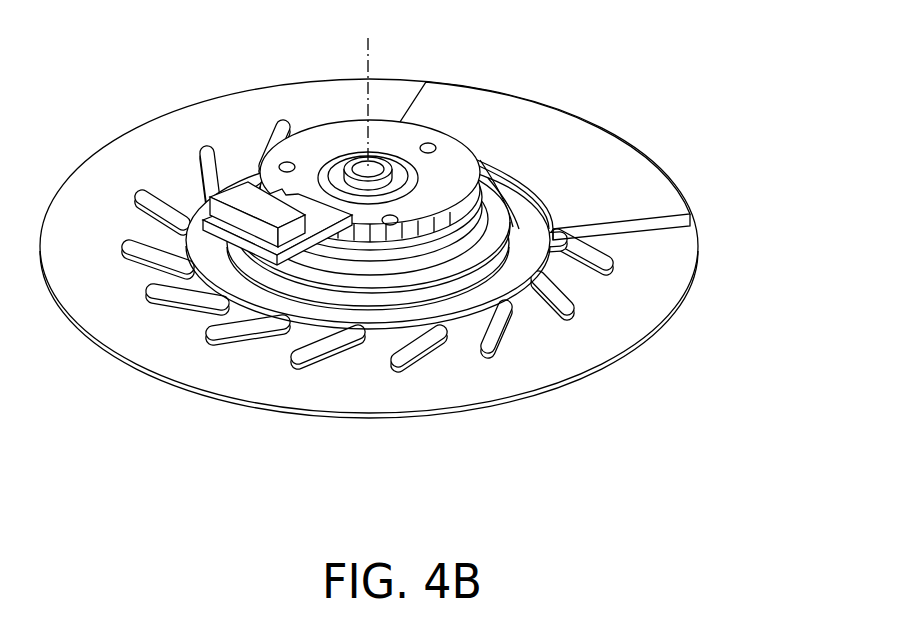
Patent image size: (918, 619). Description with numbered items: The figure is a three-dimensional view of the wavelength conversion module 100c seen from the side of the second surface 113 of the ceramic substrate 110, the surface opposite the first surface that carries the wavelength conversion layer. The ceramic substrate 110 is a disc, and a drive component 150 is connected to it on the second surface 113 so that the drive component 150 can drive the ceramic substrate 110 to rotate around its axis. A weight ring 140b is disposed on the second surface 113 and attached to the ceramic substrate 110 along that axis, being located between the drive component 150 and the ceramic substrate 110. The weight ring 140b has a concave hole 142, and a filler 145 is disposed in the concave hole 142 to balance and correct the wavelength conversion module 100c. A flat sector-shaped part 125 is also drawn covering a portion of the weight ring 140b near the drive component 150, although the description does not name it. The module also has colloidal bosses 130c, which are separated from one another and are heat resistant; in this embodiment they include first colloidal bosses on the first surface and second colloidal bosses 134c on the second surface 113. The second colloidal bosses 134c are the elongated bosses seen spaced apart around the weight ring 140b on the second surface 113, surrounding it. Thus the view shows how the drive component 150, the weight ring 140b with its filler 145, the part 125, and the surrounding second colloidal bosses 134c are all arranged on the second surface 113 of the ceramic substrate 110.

The wavelength conversion module 100c is at (414, 259).
The ceramic substrate 110 is at (535, 363).
The second surface 113 is at (443, 372).
The cover plate 125 is at (577, 177).
The colloidal bosses 130c is at (367, 302).
The second colloidal bosses 134c is at (280, 320).
The weight ring 140b is at (548, 267).
The concave hole 142 is at (503, 238).
The filler 145 is at (510, 197).
The drive component 150 is at (316, 157).